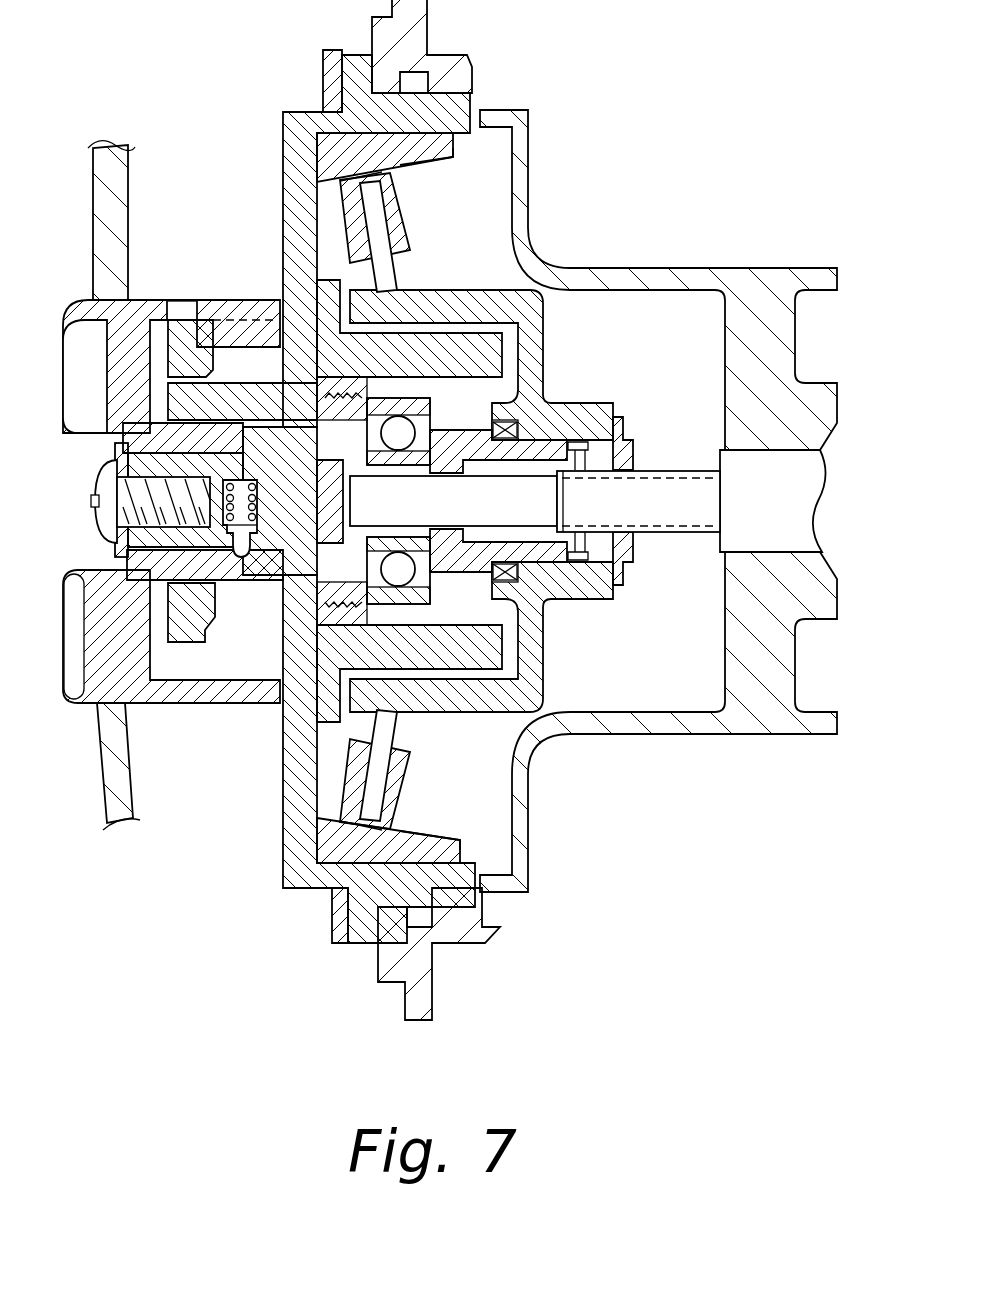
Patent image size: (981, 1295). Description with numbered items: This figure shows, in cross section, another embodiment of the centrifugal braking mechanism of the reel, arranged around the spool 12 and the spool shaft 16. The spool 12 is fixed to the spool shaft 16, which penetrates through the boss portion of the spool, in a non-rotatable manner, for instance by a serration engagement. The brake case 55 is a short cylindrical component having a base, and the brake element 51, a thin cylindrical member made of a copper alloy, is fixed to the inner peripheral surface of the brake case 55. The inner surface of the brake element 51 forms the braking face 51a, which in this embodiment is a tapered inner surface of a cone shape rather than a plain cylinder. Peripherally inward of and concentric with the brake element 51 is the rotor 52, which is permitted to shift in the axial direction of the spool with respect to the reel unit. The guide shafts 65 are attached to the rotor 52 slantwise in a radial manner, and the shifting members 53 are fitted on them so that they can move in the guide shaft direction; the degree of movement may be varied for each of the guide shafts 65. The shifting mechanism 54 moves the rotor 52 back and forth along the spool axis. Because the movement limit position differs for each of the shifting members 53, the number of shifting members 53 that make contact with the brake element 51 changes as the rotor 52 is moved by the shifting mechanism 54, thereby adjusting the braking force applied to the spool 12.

The spool 12 is at (716, 269).
The spool shaft 16 is at (662, 497).
The brake element 51 is at (407, 143).
The braking face 51a is at (421, 168).
The rotor 52 is at (550, 358).
The shifting members 53 is at (400, 231).
The shifting mechanism 54 is at (233, 300).
The brake case 55 is at (285, 188).
The guide shafts 65 is at (385, 268).